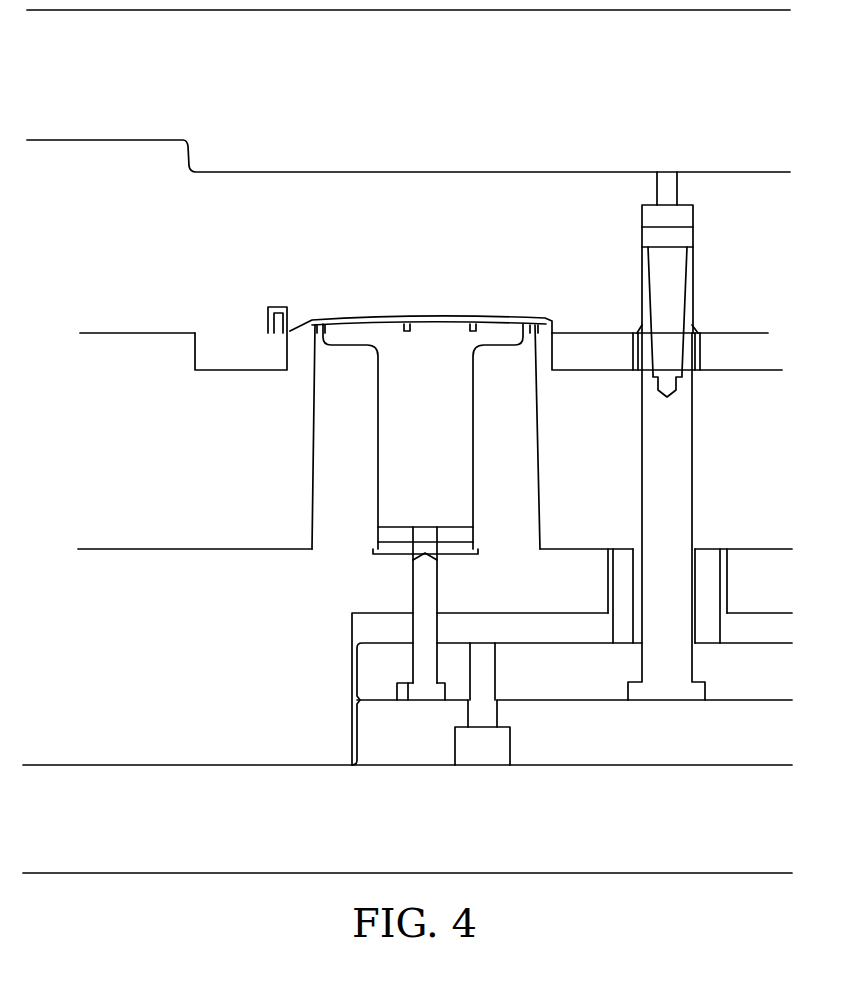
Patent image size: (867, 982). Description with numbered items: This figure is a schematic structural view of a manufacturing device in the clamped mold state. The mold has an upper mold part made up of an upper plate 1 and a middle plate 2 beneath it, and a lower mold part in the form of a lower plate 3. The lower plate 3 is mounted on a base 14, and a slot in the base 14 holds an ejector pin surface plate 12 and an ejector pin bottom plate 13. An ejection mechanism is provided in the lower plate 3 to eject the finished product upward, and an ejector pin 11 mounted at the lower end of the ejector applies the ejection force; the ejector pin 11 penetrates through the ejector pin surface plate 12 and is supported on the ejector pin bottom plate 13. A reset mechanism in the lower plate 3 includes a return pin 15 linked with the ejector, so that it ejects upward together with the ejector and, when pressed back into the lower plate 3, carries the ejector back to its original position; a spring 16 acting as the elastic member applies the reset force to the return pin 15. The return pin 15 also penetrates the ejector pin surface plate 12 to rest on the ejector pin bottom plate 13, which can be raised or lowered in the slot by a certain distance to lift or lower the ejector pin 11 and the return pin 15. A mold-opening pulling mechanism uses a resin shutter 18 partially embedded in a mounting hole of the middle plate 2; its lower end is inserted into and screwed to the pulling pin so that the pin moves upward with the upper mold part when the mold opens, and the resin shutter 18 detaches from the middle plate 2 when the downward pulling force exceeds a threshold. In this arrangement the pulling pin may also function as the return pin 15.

The upper plate 1 is at (408, 91).
The middle plate 2 is at (424, 273).
The lower plate 3 is at (435, 430).
The ejector pin 11 is at (421, 613).
The ejector pin surface plate 12 is at (503, 685).
The ejector pin bottom plate 13 is at (503, 743).
The base 14 is at (407, 819).
The return pin 15 is at (666, 516).
The spring 16 is at (667, 596).
The resin shutter 18 is at (667, 284).